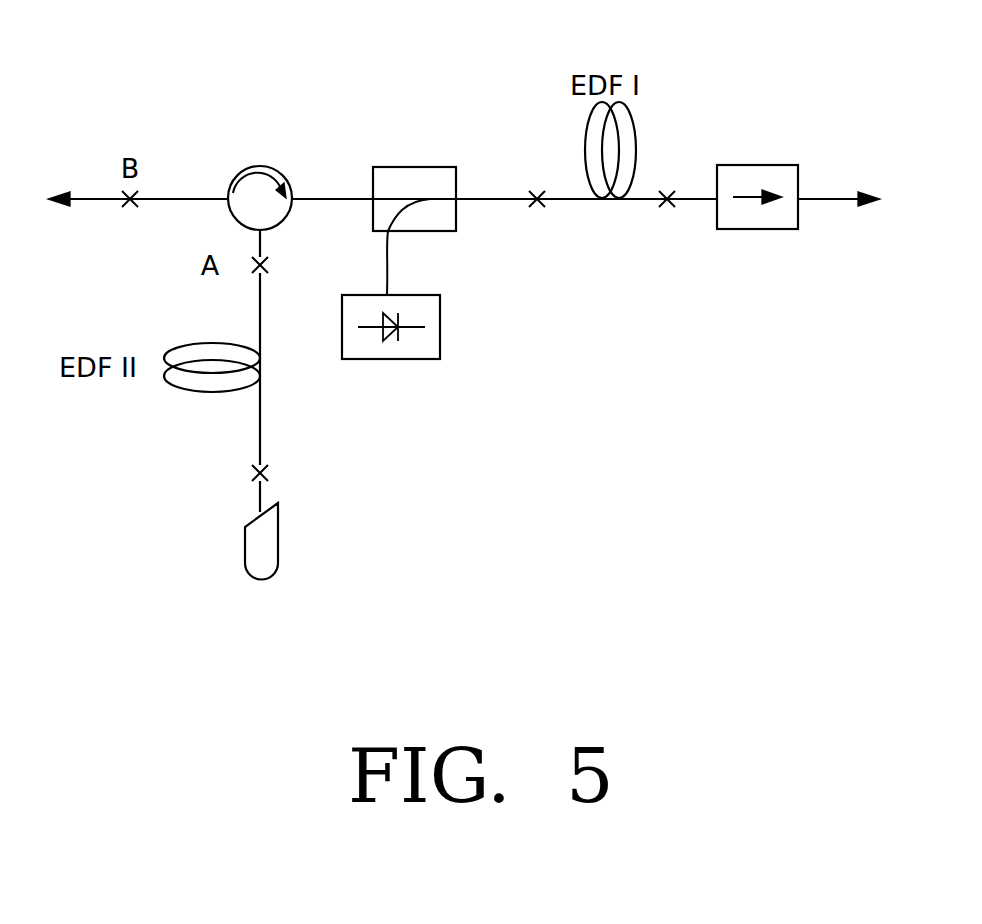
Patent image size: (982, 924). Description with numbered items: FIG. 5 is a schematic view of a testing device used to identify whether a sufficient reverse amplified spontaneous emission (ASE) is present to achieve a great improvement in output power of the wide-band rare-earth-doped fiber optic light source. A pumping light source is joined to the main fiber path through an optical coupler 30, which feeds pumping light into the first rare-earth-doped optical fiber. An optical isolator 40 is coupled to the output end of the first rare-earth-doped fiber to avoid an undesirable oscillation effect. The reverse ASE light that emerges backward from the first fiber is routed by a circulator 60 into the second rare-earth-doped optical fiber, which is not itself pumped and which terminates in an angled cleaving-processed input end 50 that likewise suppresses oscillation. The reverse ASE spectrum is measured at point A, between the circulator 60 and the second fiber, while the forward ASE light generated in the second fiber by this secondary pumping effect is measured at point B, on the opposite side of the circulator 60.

The optical coupler 30 is at (418, 165).
The optical isolator 40 is at (758, 165).
The angled cleaving-processed input end 50 is at (245, 545).
The circulator 60 is at (237, 222).